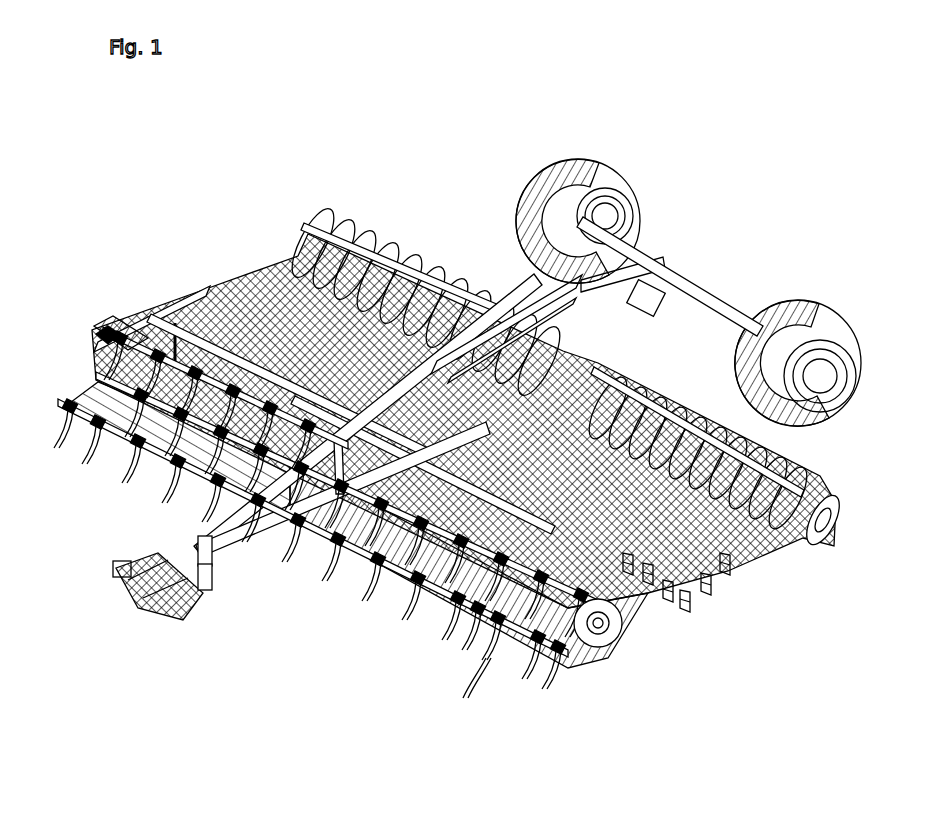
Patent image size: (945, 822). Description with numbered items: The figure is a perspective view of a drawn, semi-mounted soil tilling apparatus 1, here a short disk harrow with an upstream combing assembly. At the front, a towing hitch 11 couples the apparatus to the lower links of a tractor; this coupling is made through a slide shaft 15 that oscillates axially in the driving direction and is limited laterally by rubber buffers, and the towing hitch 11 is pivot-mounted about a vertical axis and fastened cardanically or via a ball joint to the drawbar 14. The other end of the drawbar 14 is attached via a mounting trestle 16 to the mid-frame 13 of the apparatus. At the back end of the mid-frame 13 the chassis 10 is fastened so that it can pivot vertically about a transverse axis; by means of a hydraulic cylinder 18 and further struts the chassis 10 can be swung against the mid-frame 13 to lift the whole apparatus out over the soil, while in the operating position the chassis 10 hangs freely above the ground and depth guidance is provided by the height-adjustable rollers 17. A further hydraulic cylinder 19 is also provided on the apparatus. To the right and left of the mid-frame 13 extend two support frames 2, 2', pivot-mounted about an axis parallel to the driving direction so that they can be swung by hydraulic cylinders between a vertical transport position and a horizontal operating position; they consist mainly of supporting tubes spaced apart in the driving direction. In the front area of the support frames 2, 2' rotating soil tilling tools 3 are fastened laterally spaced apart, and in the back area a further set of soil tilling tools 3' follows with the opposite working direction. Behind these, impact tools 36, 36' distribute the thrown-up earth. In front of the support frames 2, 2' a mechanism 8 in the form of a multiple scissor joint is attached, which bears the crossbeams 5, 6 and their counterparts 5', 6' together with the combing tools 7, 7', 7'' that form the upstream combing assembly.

The soil tilling apparatus 1 is at (388, 150).
The support frame 2 is at (563, 700).
The support frame 2' is at (131, 330).
The soil tilling tools 3 is at (613, 635).
The soil tilling tools 3' is at (696, 624).
The crossbeam 5 is at (383, 618).
The tine 5' is at (83, 464).
The crossbeam 6 is at (437, 634).
The tine holder 6' is at (163, 483).
The combing tools 7 is at (494, 674).
The combing tools 7' is at (453, 662).
The tine 7'' is at (543, 690).
The mechanism 8 is at (502, 652).
The chassis 10 is at (745, 274).
The towing hitch 11 is at (130, 605).
The mid-frame 13 is at (320, 558).
The drawbar 14 is at (199, 538).
The slide shaft 15 is at (192, 579).
The mounting trestle 16 is at (306, 224).
The rollers 17 is at (826, 486).
The hydraulic cylinder 18 is at (512, 280).
The hydraulic cylinder 19 is at (592, 354).
The impact tools 36 is at (662, 644).
The impact tools 36' is at (743, 597).